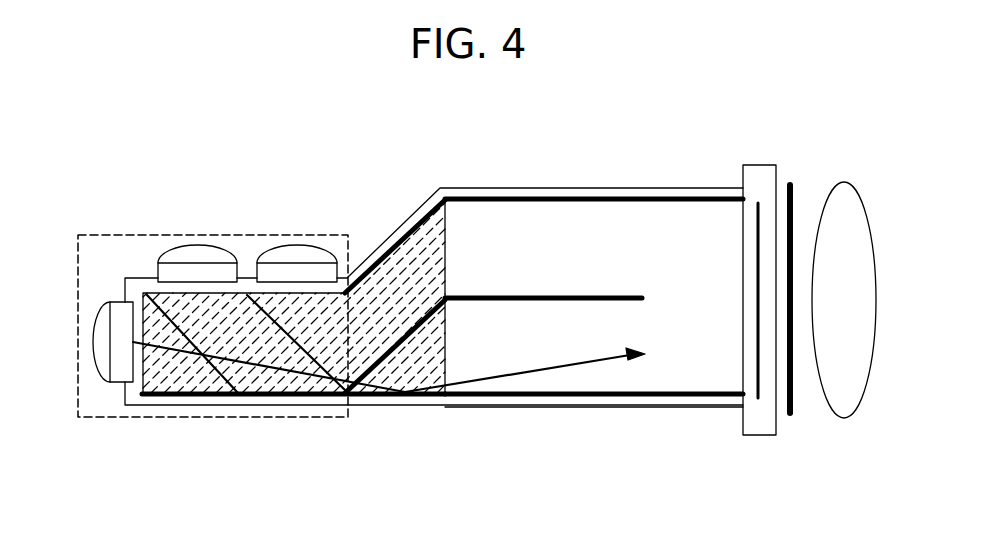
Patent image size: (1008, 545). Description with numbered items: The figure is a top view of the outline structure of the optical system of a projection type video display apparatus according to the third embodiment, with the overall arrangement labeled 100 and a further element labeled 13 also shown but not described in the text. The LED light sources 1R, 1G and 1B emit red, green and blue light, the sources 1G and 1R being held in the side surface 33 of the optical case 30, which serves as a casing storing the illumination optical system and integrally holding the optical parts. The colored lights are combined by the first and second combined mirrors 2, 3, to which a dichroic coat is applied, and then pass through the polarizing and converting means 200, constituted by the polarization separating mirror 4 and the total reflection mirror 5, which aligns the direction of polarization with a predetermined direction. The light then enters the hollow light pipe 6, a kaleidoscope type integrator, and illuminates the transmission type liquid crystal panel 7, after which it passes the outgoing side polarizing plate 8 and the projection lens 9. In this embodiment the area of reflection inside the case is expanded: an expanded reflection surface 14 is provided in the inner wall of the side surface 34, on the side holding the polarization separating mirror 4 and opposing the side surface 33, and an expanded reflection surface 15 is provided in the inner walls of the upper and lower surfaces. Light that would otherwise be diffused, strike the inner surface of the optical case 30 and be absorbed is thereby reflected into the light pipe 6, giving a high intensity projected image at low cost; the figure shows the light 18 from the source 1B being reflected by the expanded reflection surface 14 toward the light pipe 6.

The light source unit 100 is at (226, 235).
The polarizing and converting means 200 is at (457, 137).
The LED light source 1G is at (187, 252).
The LED light source 1R is at (285, 252).
The LED light source 1B is at (105, 362).
The first combined mirror 2 is at (179, 384).
The second combined mirror 3 is at (278, 377).
The polarization separating mirror 4 is at (407, 318).
The total reflection mirror 5 is at (440, 203).
The light pipe 6 is at (570, 400).
The transmission type liquid crystal panel 7 is at (753, 413).
The outgoing side polarizing plate 8 is at (790, 413).
The projection lens 9 is at (840, 393).
The partition reflecting plate 13 is at (512, 300).
The expanded reflection surface 14 is at (222, 392).
The expanded reflection surface 15 is at (360, 333).
The light 18 is at (459, 384).
The optical case 30 is at (440, 190).
The side surface 33 is at (580, 188).
The side surface 34 is at (635, 408).